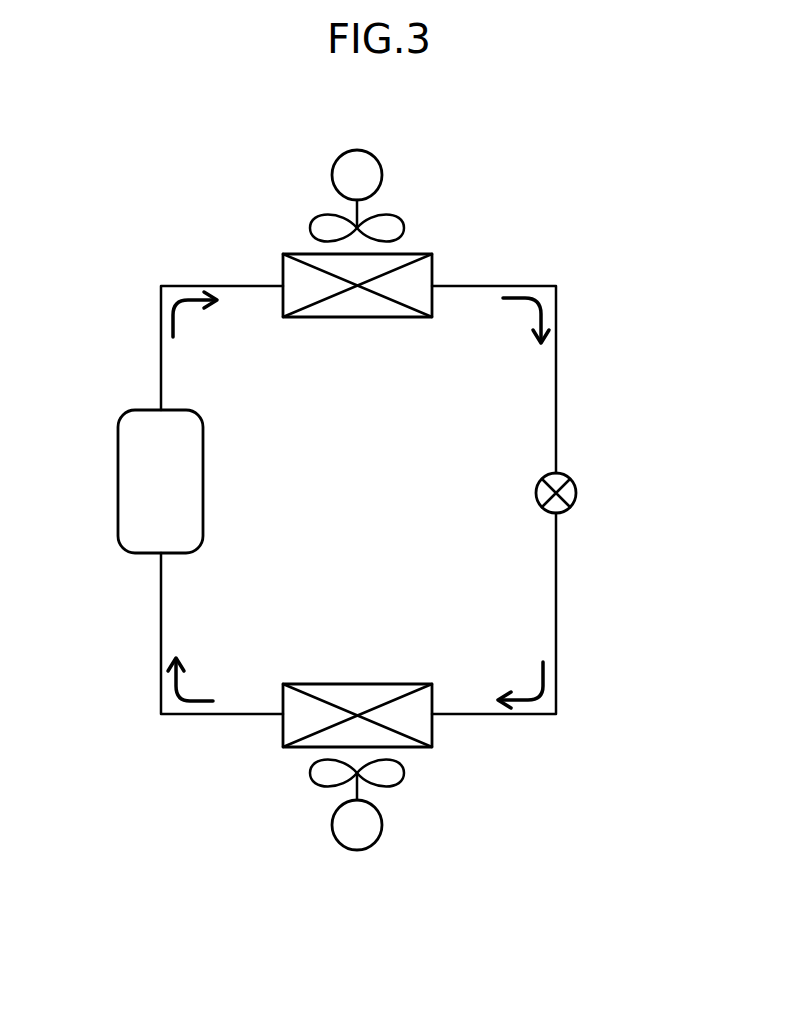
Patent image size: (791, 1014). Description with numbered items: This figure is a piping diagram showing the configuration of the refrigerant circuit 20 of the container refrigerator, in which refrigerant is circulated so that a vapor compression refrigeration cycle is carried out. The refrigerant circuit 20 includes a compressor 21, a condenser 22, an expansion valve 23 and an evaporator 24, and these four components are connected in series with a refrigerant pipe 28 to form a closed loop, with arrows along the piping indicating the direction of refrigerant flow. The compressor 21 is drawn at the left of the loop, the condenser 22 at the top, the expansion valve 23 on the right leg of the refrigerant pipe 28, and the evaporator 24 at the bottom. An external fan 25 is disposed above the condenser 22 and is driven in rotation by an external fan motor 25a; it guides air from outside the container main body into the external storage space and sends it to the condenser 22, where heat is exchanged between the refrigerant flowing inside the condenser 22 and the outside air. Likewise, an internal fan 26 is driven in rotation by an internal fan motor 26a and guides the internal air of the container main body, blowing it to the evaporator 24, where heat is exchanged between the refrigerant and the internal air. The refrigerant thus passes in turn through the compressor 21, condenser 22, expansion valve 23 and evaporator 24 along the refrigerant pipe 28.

The refrigerant circuit 20 is at (176, 238).
The compressor 21 is at (118, 478).
The condenser 22 is at (357, 317).
The expansion valve 23 is at (576, 492).
The evaporator 24 is at (357, 684).
The external fan 25 is at (408, 228).
The external fan motor 25a is at (382, 175).
The internal fan 26 is at (407, 770).
The internal fan motor 26a is at (382, 825).
The refrigerant pipe 28 is at (556, 380).